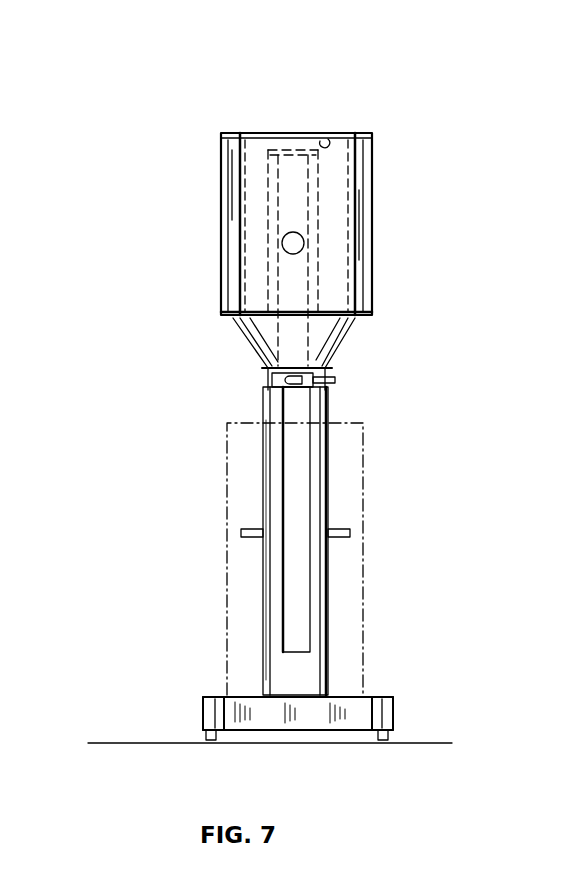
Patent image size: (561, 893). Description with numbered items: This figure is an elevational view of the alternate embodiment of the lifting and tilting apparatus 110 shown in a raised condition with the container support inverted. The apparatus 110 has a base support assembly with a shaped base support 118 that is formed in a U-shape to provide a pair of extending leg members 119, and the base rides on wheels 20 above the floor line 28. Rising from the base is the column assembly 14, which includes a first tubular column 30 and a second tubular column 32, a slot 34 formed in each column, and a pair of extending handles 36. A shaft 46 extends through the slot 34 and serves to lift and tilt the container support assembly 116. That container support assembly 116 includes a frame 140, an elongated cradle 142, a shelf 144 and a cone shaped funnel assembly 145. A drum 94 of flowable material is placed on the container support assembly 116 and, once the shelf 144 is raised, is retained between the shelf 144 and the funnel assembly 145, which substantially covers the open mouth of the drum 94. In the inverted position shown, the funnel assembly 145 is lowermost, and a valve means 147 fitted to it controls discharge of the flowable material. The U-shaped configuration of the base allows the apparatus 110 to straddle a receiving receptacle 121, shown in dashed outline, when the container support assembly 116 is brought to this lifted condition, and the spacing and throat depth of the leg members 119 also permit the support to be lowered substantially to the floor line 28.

The column assembly 14 is at (212, 491).
The wheels 20 is at (212, 741).
The floor line 28 is at (122, 743).
The first tubular column 30 is at (330, 410).
The second tubular column 32 is at (318, 181).
The slot 34 is at (286, 598).
The extending handles 36 is at (352, 533).
The shaft 46 is at (372, 242).
The drum 94 is at (372, 284).
The apparatus 110 is at (84, 457).
The container support assembly 116 is at (384, 200).
The shaped base support 118 is at (372, 697).
The leg members 119 is at (210, 697).
The receiving receptacle 121 is at (363, 487).
The frame 140 is at (221, 212).
The elongated cradle 142 is at (257, 283).
The shelf 144 is at (320, 141).
The cone shaped funnel assembly 145 is at (247, 339).
The valve means 147 is at (272, 380).